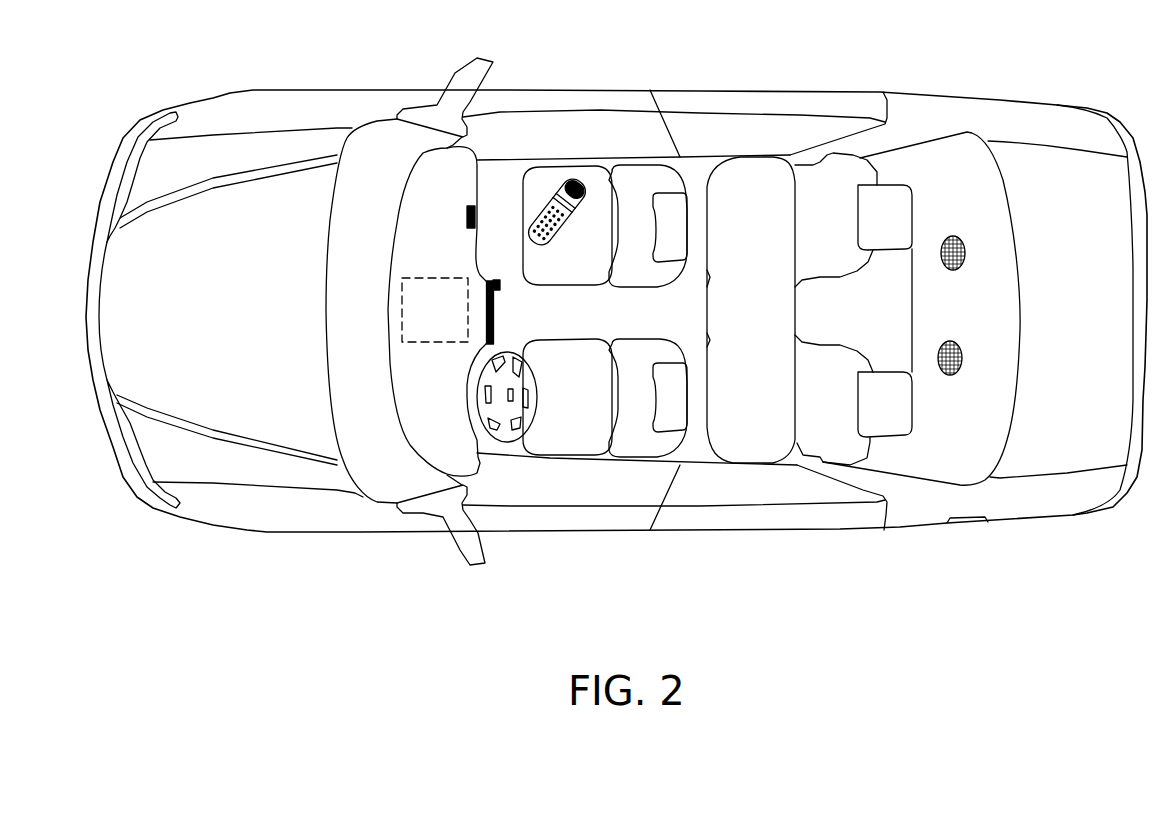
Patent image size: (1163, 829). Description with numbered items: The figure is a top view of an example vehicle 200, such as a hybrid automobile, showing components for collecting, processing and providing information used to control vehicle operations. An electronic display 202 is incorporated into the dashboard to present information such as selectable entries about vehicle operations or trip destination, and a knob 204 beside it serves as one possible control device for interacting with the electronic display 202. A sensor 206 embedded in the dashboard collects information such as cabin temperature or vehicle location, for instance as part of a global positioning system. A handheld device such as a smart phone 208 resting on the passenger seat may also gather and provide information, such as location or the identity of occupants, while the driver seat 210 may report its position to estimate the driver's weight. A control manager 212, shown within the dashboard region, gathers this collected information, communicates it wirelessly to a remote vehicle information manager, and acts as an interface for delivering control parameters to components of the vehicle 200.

The vehicle 200 is at (947, 93).
The electronic display 202 is at (494, 310).
The knob 204 is at (497, 281).
The sensor 206 is at (468, 223).
The smart phone 208 is at (566, 208).
The driver seat 210 is at (622, 339).
The control manager 212 is at (435, 310).